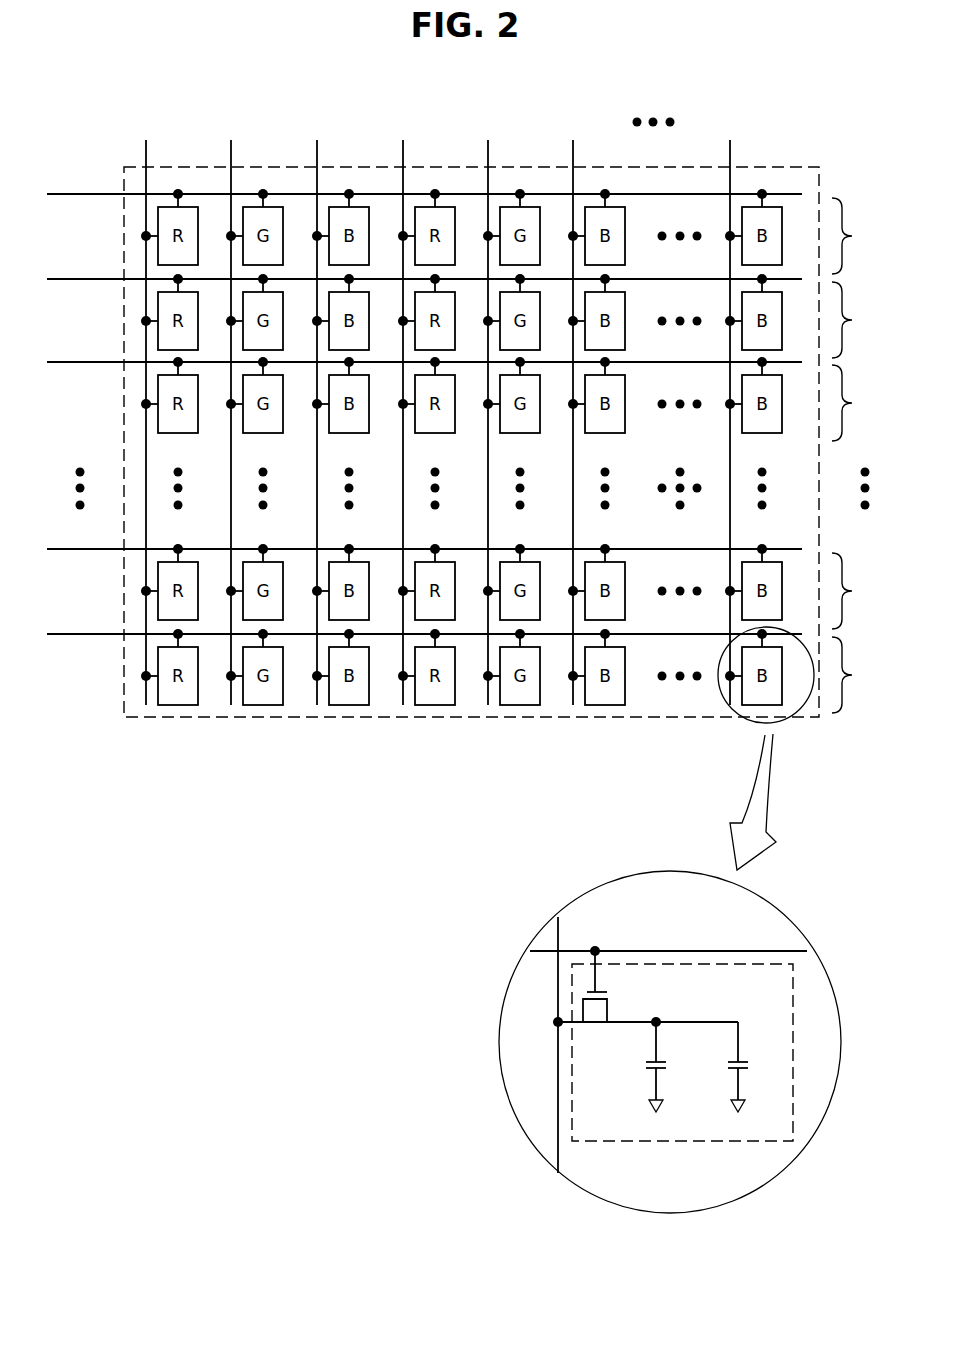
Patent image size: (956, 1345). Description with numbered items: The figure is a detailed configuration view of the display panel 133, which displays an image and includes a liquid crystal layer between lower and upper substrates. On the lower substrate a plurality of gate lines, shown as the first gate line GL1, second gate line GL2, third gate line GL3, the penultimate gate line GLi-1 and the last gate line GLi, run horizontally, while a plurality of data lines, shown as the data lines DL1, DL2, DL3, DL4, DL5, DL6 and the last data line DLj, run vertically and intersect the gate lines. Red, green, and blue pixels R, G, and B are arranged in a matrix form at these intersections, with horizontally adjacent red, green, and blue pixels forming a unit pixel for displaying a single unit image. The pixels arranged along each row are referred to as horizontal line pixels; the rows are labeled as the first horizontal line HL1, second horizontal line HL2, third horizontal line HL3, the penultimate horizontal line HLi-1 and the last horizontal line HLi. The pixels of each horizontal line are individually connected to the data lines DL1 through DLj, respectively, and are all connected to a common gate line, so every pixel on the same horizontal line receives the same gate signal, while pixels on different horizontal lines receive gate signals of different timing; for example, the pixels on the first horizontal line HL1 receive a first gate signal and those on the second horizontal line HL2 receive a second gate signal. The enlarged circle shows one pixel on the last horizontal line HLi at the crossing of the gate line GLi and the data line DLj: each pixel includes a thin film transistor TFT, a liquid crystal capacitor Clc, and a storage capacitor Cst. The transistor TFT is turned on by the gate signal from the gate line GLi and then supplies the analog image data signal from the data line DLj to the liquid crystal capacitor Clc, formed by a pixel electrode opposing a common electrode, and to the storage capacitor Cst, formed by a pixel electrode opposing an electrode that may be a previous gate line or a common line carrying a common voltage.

The display panel 133 is at (772, 166).
The first data line DL1 is at (148, 409).
The second data line DL2 is at (234, 409).
The third data line DL3 is at (319, 409).
The fourth data line DL4 is at (405, 409).
The fifth data line DL5 is at (490, 409).
The sixth data line DL6 is at (576, 409).
The j-th data line DLj is at (463, 993).
The first gate line GL1 is at (424, 184).
The second gate line GL2 is at (424, 269).
The third gate line GL3 is at (424, 352).
The (i-1)-th gate line GLi-1 is at (424, 538).
The i-th gate line GLi is at (628, 949).
The first horizontal line HL1 is at (861, 236).
The second horizontal line HL2 is at (861, 320).
The third horizontal line HL3 is at (861, 403).
The (i-1)-th horizontal line HLi-1 is at (866, 591).
The i-th horizontal line HLi is at (858, 675).
The thin film transistor TFT is at (603, 998).
The liquid crystal capacitor Clc is at (672, 1067).
The storage capacitor Cst is at (754, 1067).